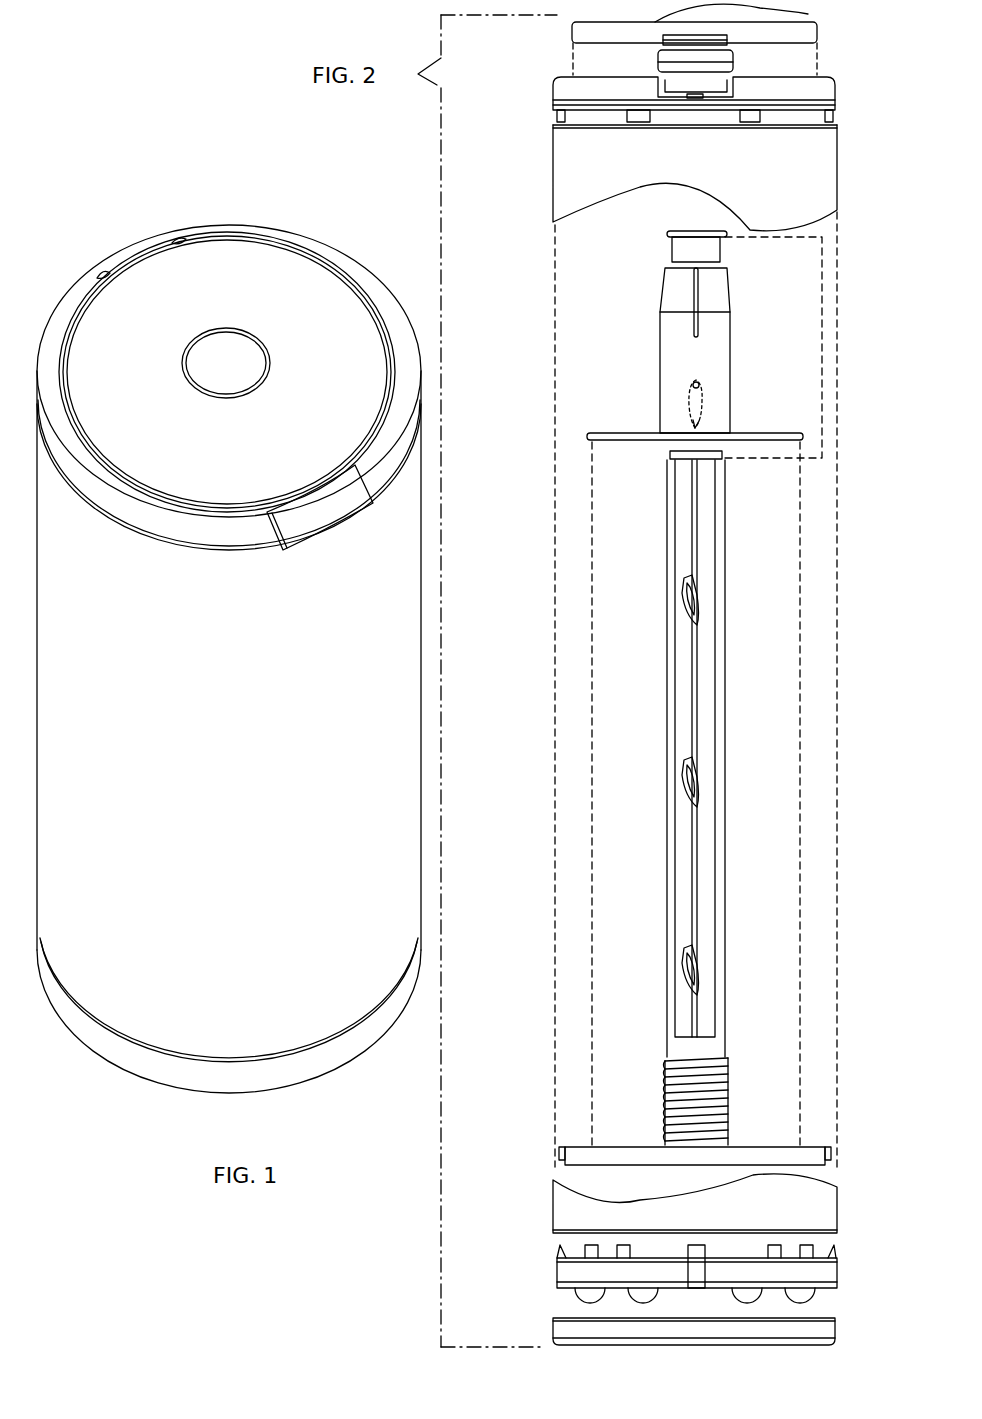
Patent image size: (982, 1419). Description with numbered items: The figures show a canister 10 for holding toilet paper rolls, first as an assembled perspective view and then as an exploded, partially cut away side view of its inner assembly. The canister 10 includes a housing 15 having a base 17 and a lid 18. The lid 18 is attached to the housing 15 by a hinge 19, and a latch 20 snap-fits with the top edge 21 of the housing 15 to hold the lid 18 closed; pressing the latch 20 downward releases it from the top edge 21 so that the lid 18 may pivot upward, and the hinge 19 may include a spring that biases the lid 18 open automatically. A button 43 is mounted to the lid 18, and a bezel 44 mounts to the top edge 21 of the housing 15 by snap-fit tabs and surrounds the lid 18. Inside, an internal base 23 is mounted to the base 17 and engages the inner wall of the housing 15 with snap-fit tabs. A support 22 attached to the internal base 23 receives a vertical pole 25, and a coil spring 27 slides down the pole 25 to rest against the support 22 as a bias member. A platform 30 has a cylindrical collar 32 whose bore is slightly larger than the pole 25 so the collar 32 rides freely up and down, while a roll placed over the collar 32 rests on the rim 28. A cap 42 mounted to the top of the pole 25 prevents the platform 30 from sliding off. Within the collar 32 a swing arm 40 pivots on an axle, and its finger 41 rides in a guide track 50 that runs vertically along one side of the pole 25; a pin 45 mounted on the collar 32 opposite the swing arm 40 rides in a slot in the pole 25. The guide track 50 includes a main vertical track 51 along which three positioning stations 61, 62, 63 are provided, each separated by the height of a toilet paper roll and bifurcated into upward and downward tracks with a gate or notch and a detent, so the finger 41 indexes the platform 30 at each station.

In FIG. 1, the canister 10 is at (86, 197).
In FIG. 1, the housing 15 is at (322, 1012).
In FIG. 2, the housing 15 is at (812, 190).
In FIG. 1, the base 17 is at (150, 1077).
In FIG. 2, the base 17 is at (820, 1328).
In FIG. 1, the lid 18 is at (303, 283).
In FIG. 2, the lid 18 is at (812, 36).
In FIG. 1, the hinge 19 is at (142, 253).
In FIG. 1, the latch 20 is at (338, 520).
In FIG. 2, the latch 20 is at (733, 54).
In FIG. 1, the top edge 21 is at (212, 553).
In FIG. 2, the top edge 21 is at (816, 128).
In FIG. 2, the support 22 is at (777, 1145).
In FIG. 2, the internal base 23 is at (812, 1270).
In FIG. 2, the pole 25 is at (722, 928).
In FIG. 2, the coil spring 27 is at (725, 1092).
In FIG. 2, the rim 28 is at (778, 432).
In FIG. 2, the platform 30 is at (670, 333).
In FIG. 2, the collar 32 is at (672, 355).
In FIG. 2, the swing arm 40 is at (702, 382).
In FIG. 2, the finger 41 is at (704, 428).
In FIG. 2, the cap 42 is at (673, 250).
In FIG. 1, the button 43 is at (200, 365).
In FIG. 1, the bezel 44 is at (75, 317).
In FIG. 2, the bezel 44 is at (825, 88).
In FIG. 2, the pin 45 is at (808, 14).
In FIG. 2, the guide track 50 is at (697, 688).
In FIG. 2, the main vertical track 51 is at (697, 742).
In FIG. 2, the positioning station 61 is at (703, 967).
In FIG. 2, the positioning station 62 is at (703, 775).
In FIG. 2, the positioning station 63 is at (703, 605).